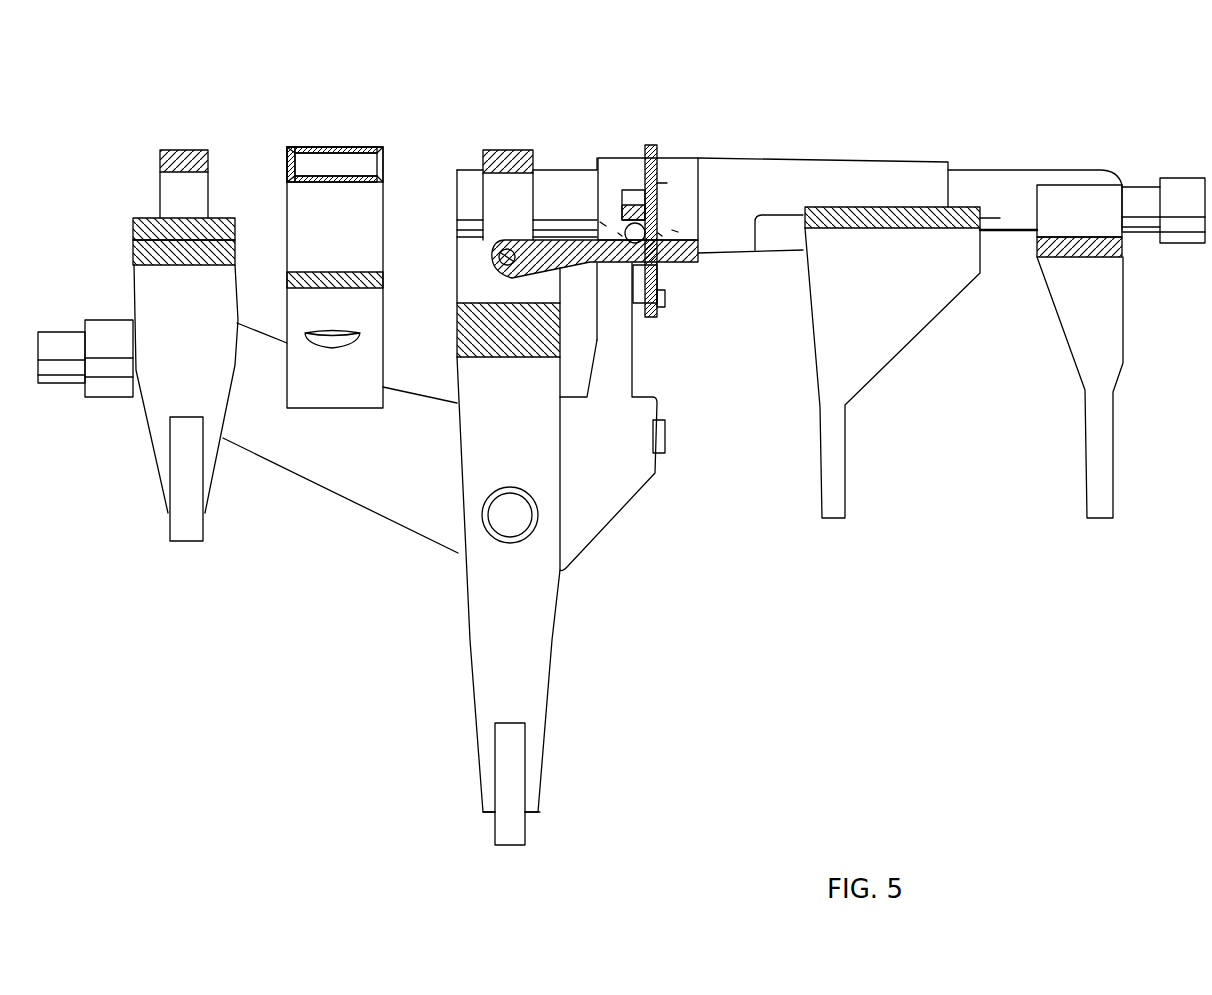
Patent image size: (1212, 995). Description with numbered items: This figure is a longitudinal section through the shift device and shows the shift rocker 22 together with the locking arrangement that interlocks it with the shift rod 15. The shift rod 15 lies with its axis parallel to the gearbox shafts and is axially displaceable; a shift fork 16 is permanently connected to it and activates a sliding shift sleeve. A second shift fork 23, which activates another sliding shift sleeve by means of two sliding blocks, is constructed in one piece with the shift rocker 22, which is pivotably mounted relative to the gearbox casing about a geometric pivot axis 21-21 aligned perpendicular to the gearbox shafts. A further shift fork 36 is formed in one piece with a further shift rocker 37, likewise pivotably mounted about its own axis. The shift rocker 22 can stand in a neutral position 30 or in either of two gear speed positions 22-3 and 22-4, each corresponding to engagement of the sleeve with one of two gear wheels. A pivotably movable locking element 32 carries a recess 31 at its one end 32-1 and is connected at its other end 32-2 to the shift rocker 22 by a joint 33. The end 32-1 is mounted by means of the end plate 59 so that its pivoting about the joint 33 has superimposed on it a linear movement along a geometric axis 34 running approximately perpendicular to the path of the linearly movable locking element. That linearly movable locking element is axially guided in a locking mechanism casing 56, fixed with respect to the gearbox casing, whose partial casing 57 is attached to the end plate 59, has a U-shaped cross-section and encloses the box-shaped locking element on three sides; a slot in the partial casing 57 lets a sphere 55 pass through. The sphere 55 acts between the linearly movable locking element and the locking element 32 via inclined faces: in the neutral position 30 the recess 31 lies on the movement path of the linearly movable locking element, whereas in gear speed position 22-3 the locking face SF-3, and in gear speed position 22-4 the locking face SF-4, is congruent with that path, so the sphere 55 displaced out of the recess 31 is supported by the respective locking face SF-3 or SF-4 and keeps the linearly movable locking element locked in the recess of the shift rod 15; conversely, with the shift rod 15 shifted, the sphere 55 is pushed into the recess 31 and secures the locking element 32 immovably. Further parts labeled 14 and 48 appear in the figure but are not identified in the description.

The hinge assembly 14 is at (720, 417).
The shift rod 15 is at (1022, 167).
The shift fork 16 is at (1116, 494).
The geometric pivot axis 21-21 is at (517, 520).
The shift rocker 22 is at (452, 377).
The gear speed position 22-3 is at (485, 815).
The gear speed position 22-4 is at (537, 815).
The shift fork 23 is at (550, 700).
The neutral position 30 is at (512, 830).
The recess 31 is at (628, 272).
The pivotably movable locking element 32 is at (556, 224).
The one end 32-1 is at (700, 266).
The other end 32-2 is at (520, 280).
The joint 33 is at (490, 273).
The geometric axis 34 is at (618, 252).
The shift fork 36 is at (166, 520).
The shift rocker 37 is at (128, 265).
The leg 48 is at (840, 522).
The sphere 55 is at (642, 250).
The locking mechanism casing 56 is at (633, 195).
The partial casing 57 is at (612, 217).
The end plate 59 is at (668, 182).
The locking face SF-3 is at (607, 223).
The locking face SF-4 is at (677, 230).